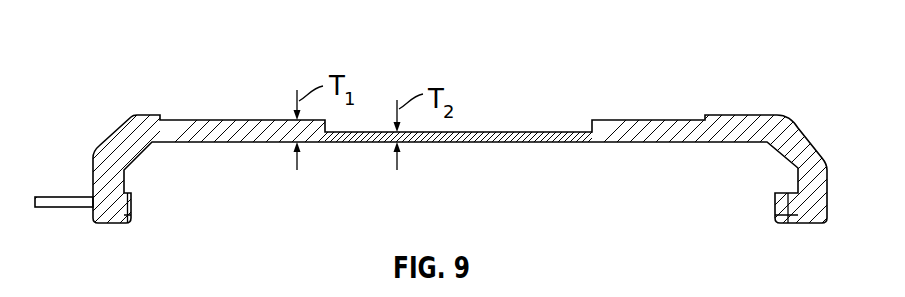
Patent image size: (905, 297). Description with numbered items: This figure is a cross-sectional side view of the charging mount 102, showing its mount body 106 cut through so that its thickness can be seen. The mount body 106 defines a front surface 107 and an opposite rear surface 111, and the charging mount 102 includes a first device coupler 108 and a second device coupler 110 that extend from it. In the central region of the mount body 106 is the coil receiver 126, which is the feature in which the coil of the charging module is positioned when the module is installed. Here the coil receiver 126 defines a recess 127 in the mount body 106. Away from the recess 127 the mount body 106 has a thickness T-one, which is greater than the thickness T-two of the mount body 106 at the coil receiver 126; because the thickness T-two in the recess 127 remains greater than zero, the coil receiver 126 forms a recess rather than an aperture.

The charging mount 102 is at (90, 31).
The mount body 106 is at (262, 125).
The front surface 107 is at (720, 156).
The first device coupler 108 is at (57, 196).
The second device coupler 110 is at (773, 208).
The rear surface 111 is at (685, 104).
The coil receiver 126 is at (460, 148).
The recess 127 is at (499, 110).